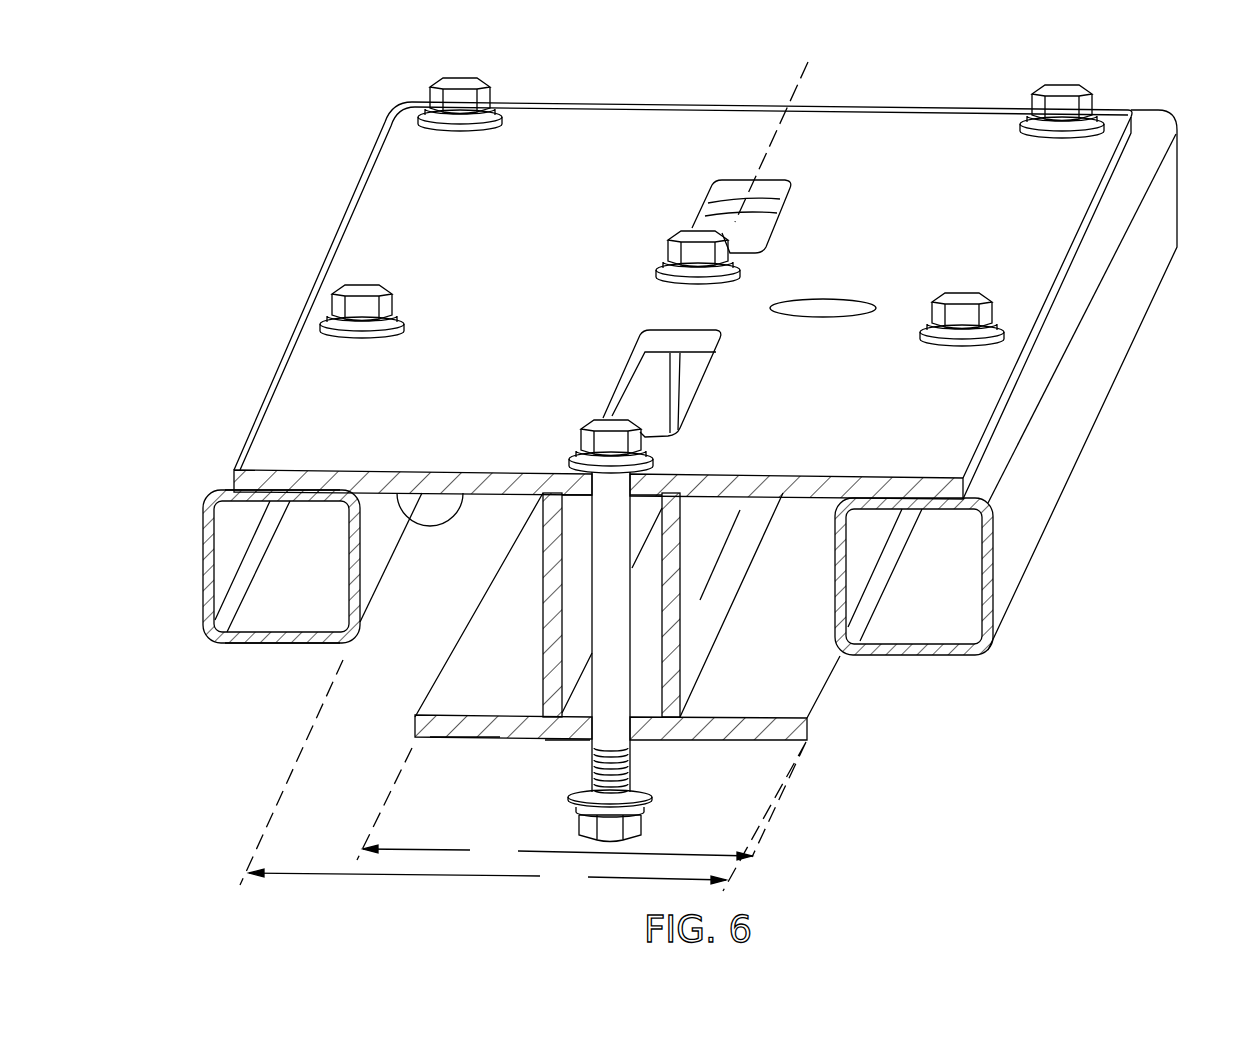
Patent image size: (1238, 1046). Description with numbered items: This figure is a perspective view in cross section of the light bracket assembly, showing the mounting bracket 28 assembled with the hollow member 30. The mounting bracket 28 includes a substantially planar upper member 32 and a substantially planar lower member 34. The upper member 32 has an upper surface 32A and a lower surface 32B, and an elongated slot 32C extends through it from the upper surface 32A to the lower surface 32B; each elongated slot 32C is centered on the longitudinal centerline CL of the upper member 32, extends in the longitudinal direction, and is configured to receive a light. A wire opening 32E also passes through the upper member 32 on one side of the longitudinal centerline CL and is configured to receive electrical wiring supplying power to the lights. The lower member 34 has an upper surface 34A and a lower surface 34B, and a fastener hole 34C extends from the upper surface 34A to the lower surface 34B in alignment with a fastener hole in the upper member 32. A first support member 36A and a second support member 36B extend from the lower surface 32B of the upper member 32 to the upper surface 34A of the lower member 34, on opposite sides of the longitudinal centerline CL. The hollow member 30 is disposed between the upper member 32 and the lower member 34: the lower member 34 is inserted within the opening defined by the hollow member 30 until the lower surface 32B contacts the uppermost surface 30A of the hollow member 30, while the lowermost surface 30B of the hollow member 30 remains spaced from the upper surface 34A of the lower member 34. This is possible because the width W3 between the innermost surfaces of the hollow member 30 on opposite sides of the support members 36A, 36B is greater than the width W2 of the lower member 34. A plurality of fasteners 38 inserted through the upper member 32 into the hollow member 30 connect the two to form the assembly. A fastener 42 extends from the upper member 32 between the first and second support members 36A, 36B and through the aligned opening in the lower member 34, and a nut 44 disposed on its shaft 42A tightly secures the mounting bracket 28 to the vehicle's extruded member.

The mounting bracket 28 is at (590, 98).
The hollow member 30 is at (203, 566).
The uppermost surface 30A is at (233, 490).
The lowermost surface 30B is at (268, 645).
The upper member 32 is at (913, 107).
The upper surface 32A is at (672, 157).
The lower surface 32B is at (397, 493).
The elongated slot 32C is at (772, 233).
The wire opening 32E is at (848, 300).
The lower member 34 is at (700, 742).
The upper surface 34A is at (762, 690).
The lower surface 34B is at (462, 738).
The fastener hole 34C is at (565, 740).
The first support member 36A is at (682, 612).
The second support member 36B is at (541, 598).
The fastener 38 is at (1080, 89).
The fastener 42 is at (588, 426).
The shaft 42A is at (632, 539).
The nut 44 is at (641, 827).
The longitudinal centerline CL is at (801, 75).
The width of the lower member W2 is at (557, 850).
The width between innermost surfaces of the hollow member W3 is at (487, 877).